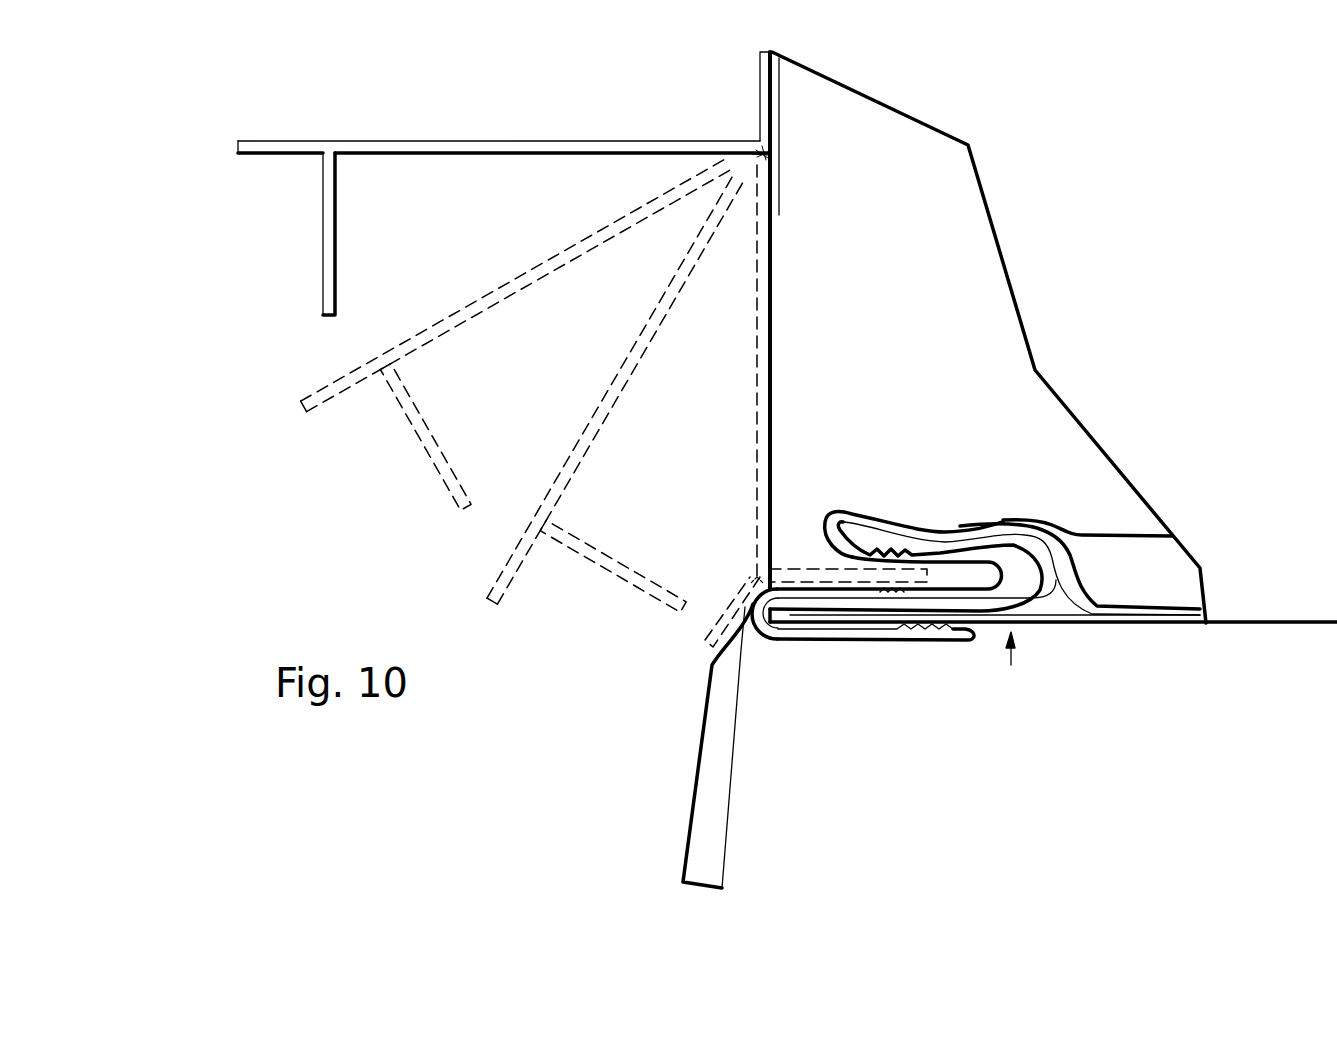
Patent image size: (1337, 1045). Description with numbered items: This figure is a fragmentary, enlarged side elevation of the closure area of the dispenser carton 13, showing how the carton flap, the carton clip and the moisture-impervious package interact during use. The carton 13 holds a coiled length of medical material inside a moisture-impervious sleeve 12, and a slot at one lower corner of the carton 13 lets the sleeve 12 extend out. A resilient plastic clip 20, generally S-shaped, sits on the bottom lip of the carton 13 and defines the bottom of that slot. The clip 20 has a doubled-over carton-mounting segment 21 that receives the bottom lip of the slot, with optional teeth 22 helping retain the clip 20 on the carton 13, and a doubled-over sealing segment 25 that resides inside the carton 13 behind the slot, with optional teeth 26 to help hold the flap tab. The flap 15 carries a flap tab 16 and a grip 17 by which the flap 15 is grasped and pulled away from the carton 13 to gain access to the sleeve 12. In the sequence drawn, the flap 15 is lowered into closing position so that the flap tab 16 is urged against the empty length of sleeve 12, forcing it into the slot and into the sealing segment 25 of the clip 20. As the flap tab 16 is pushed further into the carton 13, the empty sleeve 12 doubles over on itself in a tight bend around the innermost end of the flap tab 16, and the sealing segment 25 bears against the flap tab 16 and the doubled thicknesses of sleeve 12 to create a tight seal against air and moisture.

The sleeve 12 is at (1128, 557).
The dispenser carton 13 is at (866, 147).
The flap 15 is at (472, 140).
The flap tab 16 is at (322, 270).
The grip 17 is at (258, 140).
The clip 20 is at (1013, 665).
The carton-mounting segment 21 is at (783, 643).
The teeth 22 is at (917, 641).
The sealing segment 25 is at (781, 562).
The teeth 26 is at (886, 548).